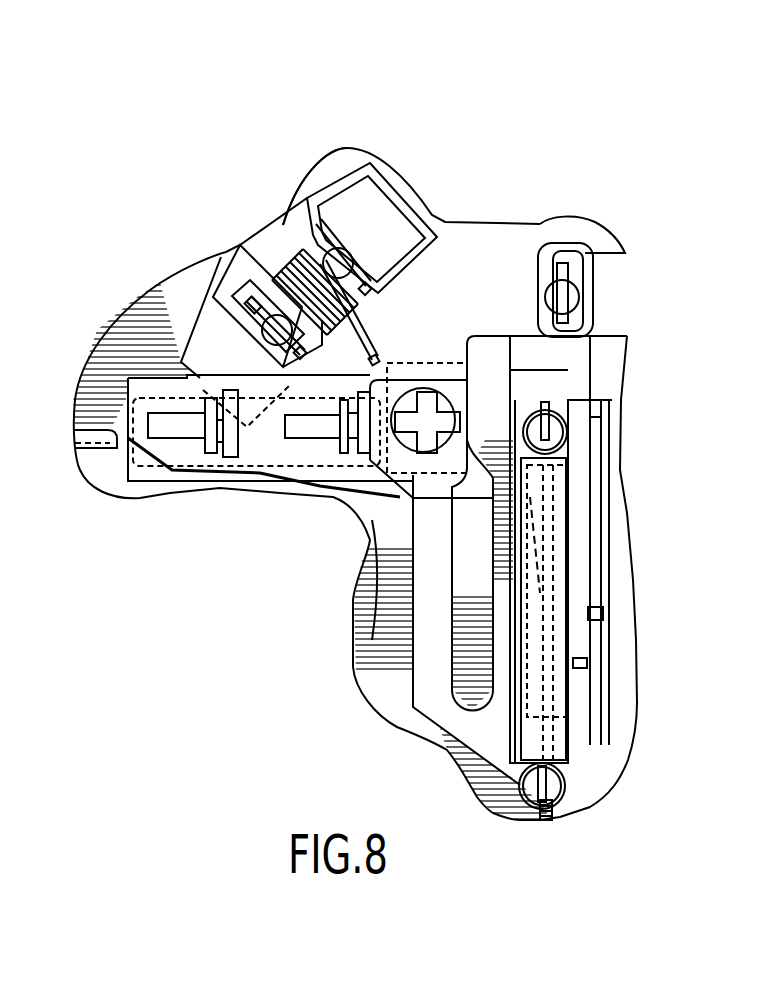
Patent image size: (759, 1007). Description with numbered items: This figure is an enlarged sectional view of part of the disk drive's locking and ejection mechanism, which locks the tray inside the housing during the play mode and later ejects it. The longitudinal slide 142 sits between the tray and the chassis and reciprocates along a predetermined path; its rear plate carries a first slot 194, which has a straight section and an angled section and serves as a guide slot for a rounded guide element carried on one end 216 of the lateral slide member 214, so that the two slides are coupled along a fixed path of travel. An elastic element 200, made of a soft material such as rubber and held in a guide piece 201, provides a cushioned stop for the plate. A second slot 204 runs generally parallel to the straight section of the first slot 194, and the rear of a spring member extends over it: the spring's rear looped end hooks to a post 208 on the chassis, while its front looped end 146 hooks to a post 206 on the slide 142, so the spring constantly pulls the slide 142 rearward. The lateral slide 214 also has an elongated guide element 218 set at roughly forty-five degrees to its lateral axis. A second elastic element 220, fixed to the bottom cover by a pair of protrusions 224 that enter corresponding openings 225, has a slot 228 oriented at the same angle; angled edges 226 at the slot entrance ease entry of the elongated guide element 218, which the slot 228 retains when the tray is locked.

The slide 142 is at (577, 365).
The front looped end 146 is at (570, 817).
The first slot 194 is at (433, 480).
The elastic element 200 is at (545, 250).
The guide piece 201 is at (598, 280).
The second slot 204 is at (526, 392).
The post 206 is at (523, 775).
The post 208 is at (547, 402).
The lateral slide member 214 is at (182, 458).
The end of the slide 216 is at (462, 385).
The elongated guide element 218 is at (262, 265).
The elastic element 220 is at (215, 318).
The protrusions 224 is at (262, 318).
The openings 225 is at (310, 238).
The angled edges 226 is at (365, 256).
The slot 228 is at (283, 273).